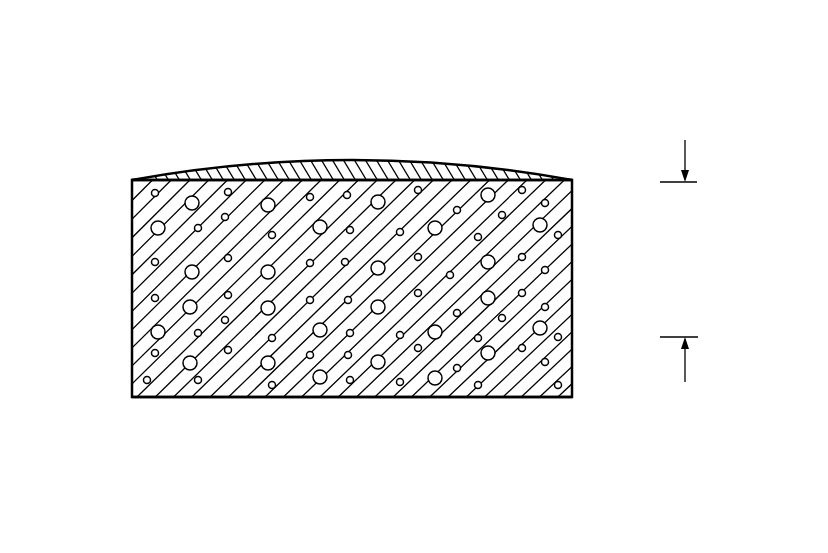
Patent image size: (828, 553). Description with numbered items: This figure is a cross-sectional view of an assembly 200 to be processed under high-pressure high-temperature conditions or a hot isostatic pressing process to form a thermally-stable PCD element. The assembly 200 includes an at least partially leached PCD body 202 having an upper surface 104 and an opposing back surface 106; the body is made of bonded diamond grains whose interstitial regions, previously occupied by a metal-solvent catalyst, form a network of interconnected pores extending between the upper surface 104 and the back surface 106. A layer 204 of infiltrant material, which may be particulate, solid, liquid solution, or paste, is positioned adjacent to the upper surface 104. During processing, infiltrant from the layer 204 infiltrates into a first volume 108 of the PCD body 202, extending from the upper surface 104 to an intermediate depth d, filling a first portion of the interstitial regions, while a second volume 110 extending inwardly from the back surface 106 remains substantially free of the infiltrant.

The assembly 200 is at (582, 74).
The at least partially leached PCD body 202 is at (132, 253).
The layer of infiltrant material 204 is at (300, 165).
The upper surface 104 is at (574, 186).
The back surface 106 is at (507, 400).
The first volume 108 is at (597, 180).
The second volume 110 is at (597, 340).